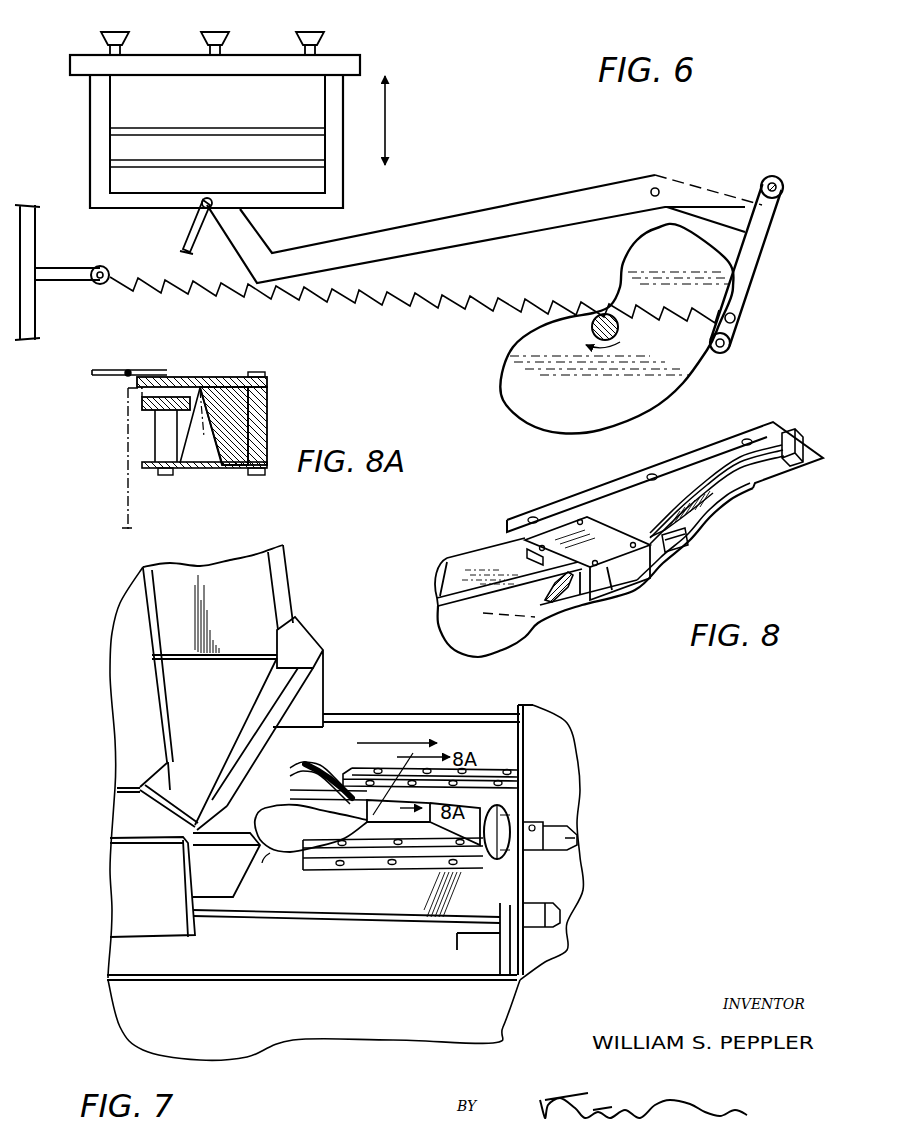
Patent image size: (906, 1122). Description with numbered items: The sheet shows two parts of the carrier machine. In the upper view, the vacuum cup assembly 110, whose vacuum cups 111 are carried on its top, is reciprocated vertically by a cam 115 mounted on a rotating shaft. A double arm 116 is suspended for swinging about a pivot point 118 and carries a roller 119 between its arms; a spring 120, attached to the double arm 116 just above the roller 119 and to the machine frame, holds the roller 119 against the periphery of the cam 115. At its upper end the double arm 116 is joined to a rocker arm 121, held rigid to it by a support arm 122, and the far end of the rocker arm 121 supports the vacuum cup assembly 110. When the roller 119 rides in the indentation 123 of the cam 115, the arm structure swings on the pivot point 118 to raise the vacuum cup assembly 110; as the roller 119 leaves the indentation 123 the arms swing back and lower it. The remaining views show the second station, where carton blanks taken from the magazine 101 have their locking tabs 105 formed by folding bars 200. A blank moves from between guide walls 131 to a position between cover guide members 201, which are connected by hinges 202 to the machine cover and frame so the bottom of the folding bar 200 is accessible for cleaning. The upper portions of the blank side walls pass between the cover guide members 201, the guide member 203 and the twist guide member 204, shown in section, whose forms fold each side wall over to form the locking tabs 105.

In FIG. 7, the magazine 101 is at (280, 598).
In FIG. 8A, the locking tabs 105 is at (197, 367).
In FIG. 6, the vacuum cup assembly 110 is at (374, 46).
In FIG. 6, the feed cups 111 is at (200, 34).
In FIG. 6, the cam 115 is at (535, 410).
In FIG. 6, the double arm 116 is at (758, 262).
In FIG. 6, the pivot point 118 is at (778, 178).
In FIG. 6, the roller 119 is at (732, 350).
In FIG. 6, the spring 120 is at (417, 302).
In FIG. 6, the rocker arm 121 is at (521, 211).
In FIG. 6, the support arm 122 is at (668, 209).
In FIG. 6, the indentation 123 is at (601, 312).
In FIG. 7, the guide walls 131 is at (232, 810).
In FIG. 8, the folding bars 200 is at (640, 602).
In FIG. 7, the folding bars 200 is at (360, 766).
In FIG. 8A, the cover guide members 201 is at (268, 380).
In FIG. 8, the cover guide members 201 is at (713, 531).
In FIG. 7, the cover guide members 201 is at (273, 853).
In FIG. 8A, the hinges 202 is at (115, 368).
In FIG. 8, the hinges 202 is at (722, 445).
In FIG. 7, the hinges 202 is at (427, 862).
In FIG. 8A, the guide member 203 is at (238, 458).
In FIG. 8, the guide member 203 is at (570, 588).
In FIG. 8A, the twist guide member 204 is at (142, 402).
In FIG. 8, the twist guide member 204 is at (612, 520).